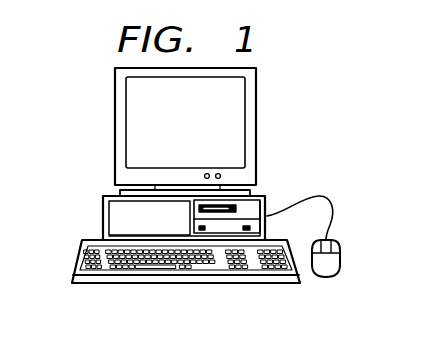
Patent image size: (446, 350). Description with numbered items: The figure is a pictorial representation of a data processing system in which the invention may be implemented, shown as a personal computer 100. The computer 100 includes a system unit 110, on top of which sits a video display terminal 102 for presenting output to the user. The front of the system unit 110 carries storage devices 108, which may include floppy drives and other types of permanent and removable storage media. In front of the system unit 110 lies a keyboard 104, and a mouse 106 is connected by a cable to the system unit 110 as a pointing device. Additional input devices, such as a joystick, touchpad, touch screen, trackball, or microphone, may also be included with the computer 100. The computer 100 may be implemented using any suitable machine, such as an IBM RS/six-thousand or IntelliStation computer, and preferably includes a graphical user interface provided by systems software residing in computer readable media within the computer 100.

The computer 100 is at (294, 87).
The video display terminal 102 is at (130, 122).
The keyboard 104 is at (100, 285).
The mouse 106 is at (326, 277).
The storage devices 108 is at (250, 201).
The system unit 110 is at (105, 216).